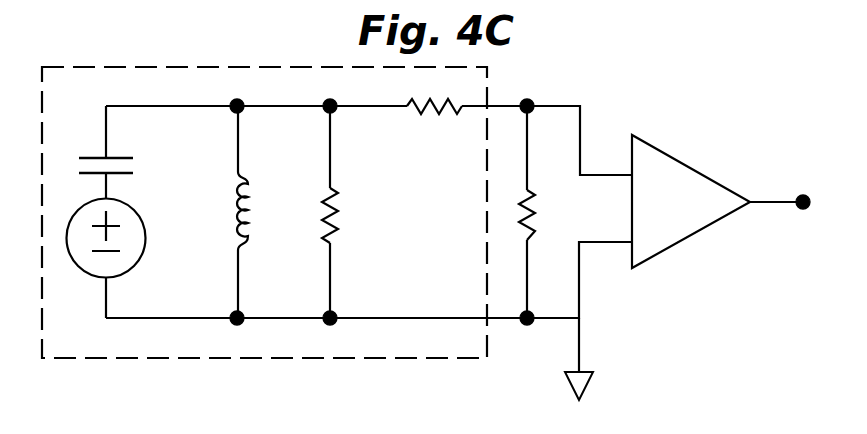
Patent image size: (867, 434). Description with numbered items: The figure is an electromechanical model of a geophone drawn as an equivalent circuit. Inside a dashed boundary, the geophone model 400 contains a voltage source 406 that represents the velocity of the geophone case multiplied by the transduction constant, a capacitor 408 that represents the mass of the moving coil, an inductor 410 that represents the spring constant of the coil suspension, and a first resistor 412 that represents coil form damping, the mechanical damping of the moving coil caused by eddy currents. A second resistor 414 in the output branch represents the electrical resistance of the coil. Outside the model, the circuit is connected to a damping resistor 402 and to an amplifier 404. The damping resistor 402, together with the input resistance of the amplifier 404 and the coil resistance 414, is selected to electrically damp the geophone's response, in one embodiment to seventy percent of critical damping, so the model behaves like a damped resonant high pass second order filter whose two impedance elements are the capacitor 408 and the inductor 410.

The geophone model 400 is at (346, 360).
The damping resistor 402 is at (537, 230).
The amplifier 404 is at (689, 162).
The voltage source 406 is at (136, 265).
The capacitor 408 is at (118, 160).
The inductor 410 is at (247, 206).
The first resistor 412 is at (340, 213).
The second resistor 414 is at (418, 112).